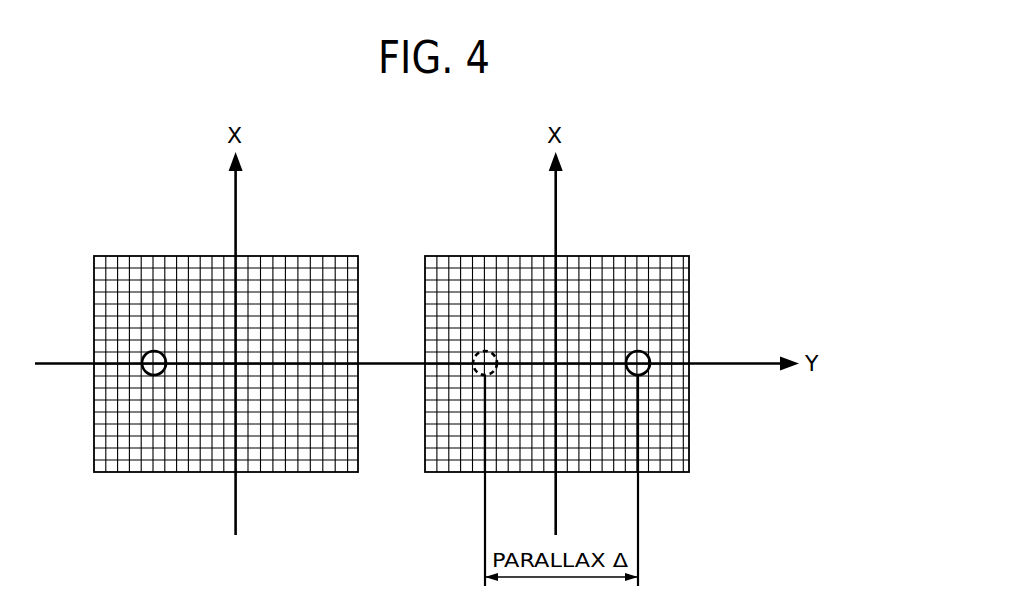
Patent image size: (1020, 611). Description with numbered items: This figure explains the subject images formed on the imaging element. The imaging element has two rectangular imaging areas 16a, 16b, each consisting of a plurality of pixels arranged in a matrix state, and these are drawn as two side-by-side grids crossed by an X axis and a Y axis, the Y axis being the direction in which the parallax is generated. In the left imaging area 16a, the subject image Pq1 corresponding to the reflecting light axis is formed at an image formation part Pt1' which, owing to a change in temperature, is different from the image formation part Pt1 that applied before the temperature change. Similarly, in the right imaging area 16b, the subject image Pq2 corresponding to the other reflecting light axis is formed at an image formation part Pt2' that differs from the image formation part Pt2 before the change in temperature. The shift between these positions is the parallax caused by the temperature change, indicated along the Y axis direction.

The imaging area 16a is at (313, 280).
The imaging area 16b is at (643, 280).
The subject image Pq1 is at (155, 351).
The subject image Pq2 is at (645, 352).
The image formation part Pt1 is at (207, 441).
The image formation part Pt1' is at (136, 446).
The image formation part Pt2 is at (525, 441).
The image formation part Pt2' is at (696, 407).